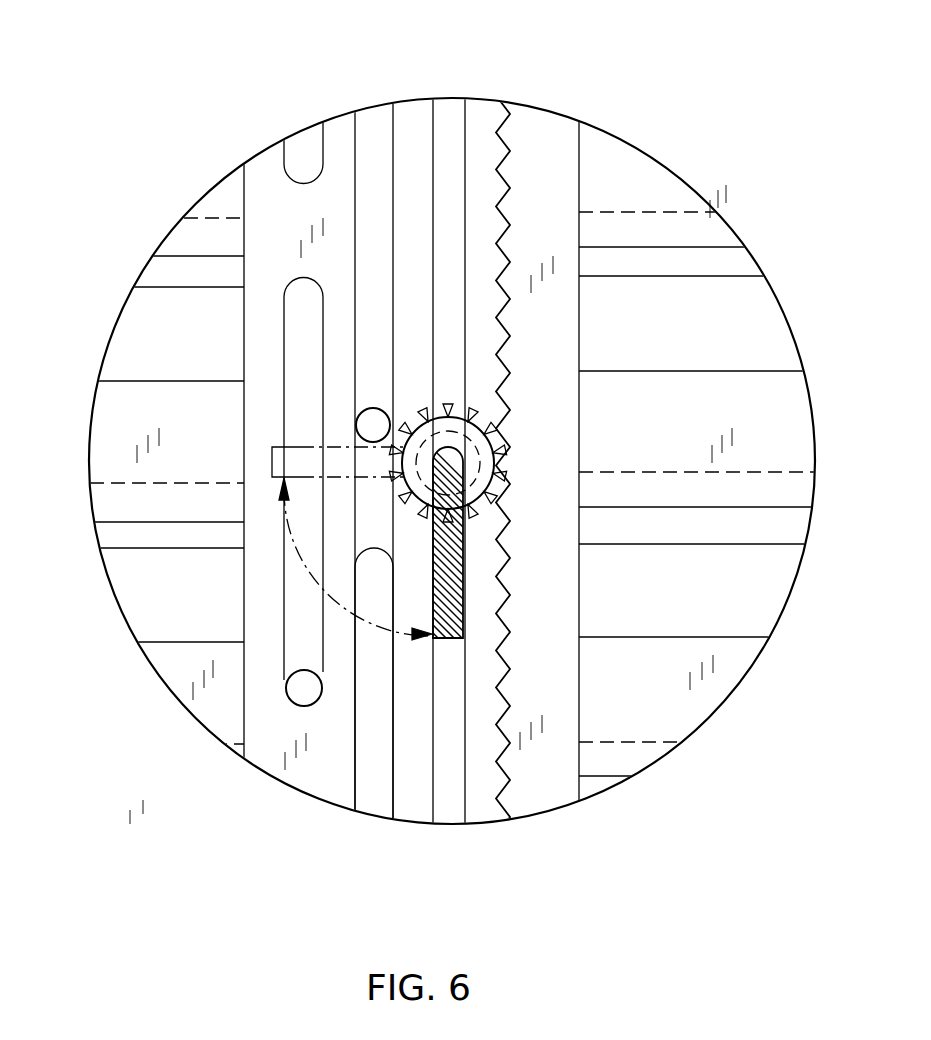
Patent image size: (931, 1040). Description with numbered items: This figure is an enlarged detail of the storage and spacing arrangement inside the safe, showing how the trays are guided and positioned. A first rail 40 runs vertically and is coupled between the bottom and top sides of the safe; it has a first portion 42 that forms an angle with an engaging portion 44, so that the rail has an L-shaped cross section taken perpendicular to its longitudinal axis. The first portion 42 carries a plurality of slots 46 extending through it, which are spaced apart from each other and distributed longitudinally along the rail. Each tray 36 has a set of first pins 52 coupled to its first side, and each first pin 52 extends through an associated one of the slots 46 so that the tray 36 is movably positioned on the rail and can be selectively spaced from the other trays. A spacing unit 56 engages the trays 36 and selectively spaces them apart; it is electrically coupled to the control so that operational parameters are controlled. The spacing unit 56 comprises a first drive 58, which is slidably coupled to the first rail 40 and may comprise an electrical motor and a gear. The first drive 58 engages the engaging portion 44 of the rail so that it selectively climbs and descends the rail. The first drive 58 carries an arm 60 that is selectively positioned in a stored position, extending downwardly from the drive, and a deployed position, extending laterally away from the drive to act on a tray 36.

The tray 36 is at (180, 288).
The first rail 40 is at (244, 205).
The first portion 42 is at (315, 770).
The engaging portion 44 is at (538, 793).
The slot 46 is at (285, 288).
The first pin 52 is at (356, 423).
The spacing unit 56 is at (447, 393).
The first drive 58 is at (473, 403).
The arm 60 is at (452, 568).